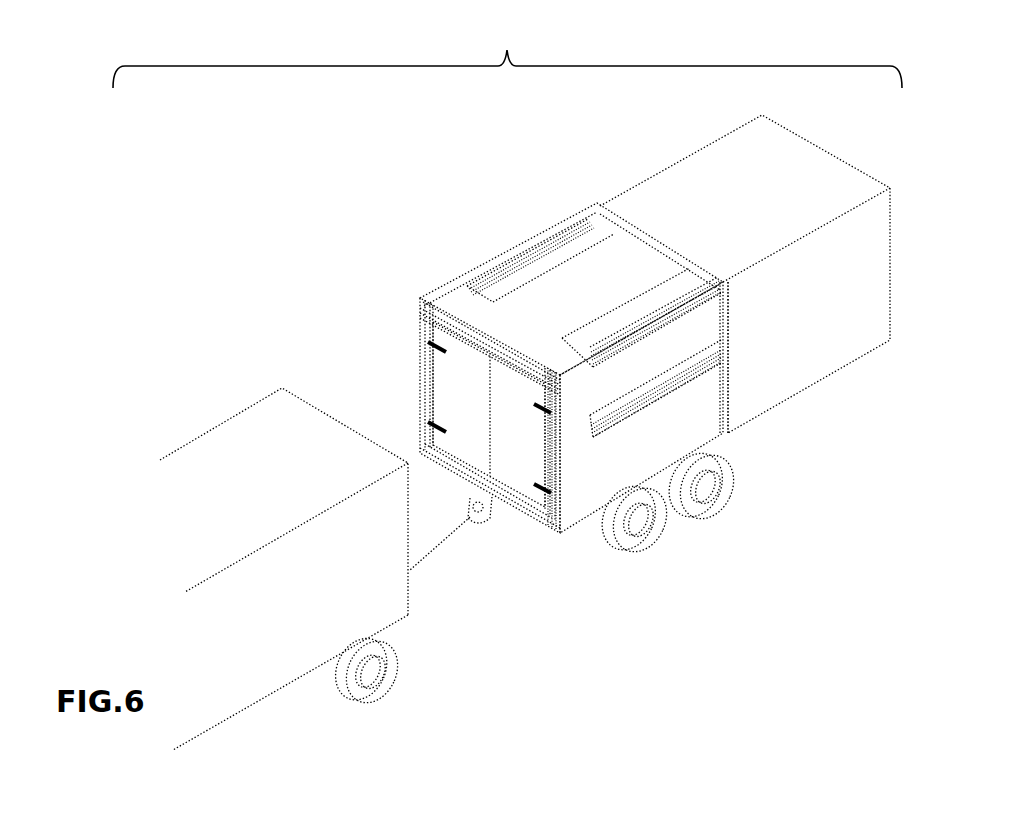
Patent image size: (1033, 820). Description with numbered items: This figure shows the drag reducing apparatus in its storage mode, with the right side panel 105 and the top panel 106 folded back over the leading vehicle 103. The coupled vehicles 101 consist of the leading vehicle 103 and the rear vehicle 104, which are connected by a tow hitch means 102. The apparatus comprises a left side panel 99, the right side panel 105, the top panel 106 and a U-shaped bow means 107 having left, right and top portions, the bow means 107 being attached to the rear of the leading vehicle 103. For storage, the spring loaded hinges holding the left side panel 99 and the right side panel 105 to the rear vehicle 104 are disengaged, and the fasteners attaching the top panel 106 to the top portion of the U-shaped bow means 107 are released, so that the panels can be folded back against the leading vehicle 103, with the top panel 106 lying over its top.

The coupled vehicles 101 is at (507, 51).
The left side panel 99 is at (482, 264).
The tow hitch means 102 is at (452, 547).
The leading vehicle 103 is at (745, 274).
The rear vehicle 104 is at (284, 569).
The right side panel 105 is at (641, 407).
The top panel 106 is at (571, 291).
The U-shaped bow means 107 is at (637, 228).